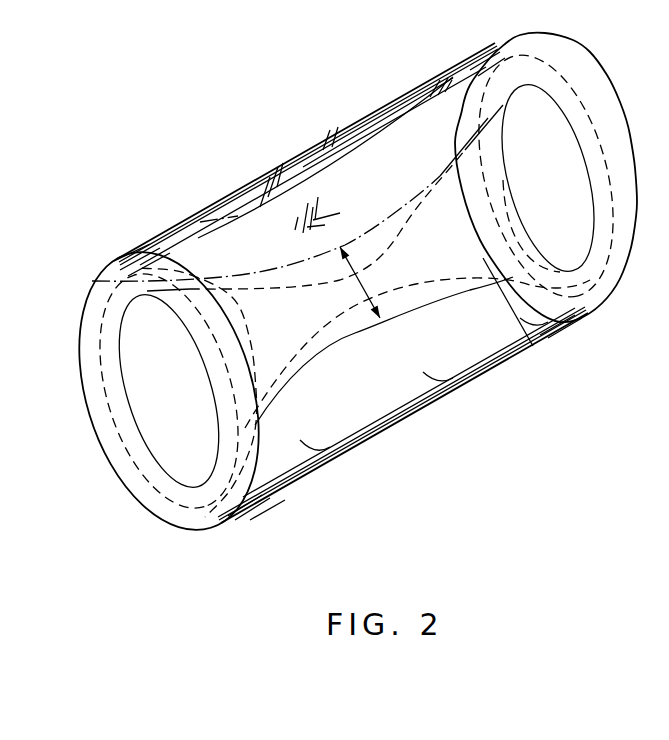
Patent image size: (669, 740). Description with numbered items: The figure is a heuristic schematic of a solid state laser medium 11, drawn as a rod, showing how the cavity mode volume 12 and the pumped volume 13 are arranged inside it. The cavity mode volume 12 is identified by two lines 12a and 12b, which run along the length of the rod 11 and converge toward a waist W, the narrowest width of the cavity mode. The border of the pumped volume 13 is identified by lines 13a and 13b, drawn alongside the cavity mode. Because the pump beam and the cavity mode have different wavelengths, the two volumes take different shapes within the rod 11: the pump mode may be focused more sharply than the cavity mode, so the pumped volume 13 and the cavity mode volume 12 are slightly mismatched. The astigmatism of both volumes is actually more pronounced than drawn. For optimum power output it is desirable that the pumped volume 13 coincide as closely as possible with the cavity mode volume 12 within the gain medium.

The solid state laser medium 11 is at (256, 173).
The cavity mode volume 12 is at (559, 172).
The line 12a is at (400, 212).
The line 12b is at (443, 293).
The pumped volume 13 is at (520, 72).
The line 13a is at (440, 167).
The line 13b is at (527, 317).
The waist W is at (380, 318).